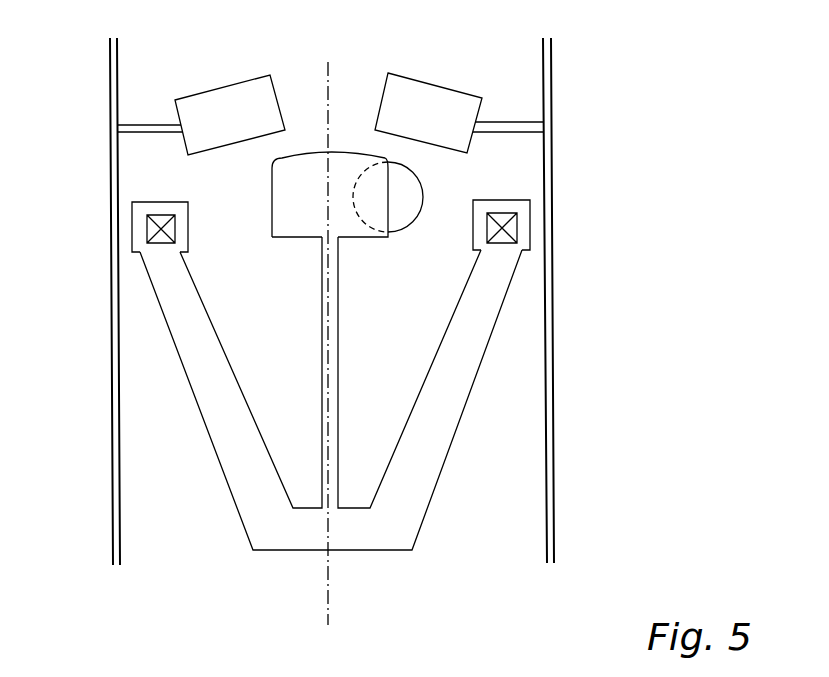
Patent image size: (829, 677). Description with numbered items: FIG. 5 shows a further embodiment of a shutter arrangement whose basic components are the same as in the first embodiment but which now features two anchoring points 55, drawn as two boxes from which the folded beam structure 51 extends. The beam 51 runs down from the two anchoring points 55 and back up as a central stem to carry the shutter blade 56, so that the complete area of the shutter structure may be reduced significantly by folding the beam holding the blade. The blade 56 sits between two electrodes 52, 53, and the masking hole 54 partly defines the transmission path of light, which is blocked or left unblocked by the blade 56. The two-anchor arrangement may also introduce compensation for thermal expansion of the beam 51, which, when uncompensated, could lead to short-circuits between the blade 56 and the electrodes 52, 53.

The arm 51 is at (338, 396).
The electrode 52 is at (205, 92).
The electrode 53 is at (457, 88).
The masking hole 54 is at (422, 222).
The anchoring point 55 is at (132, 222).
The blade 56 is at (297, 238).